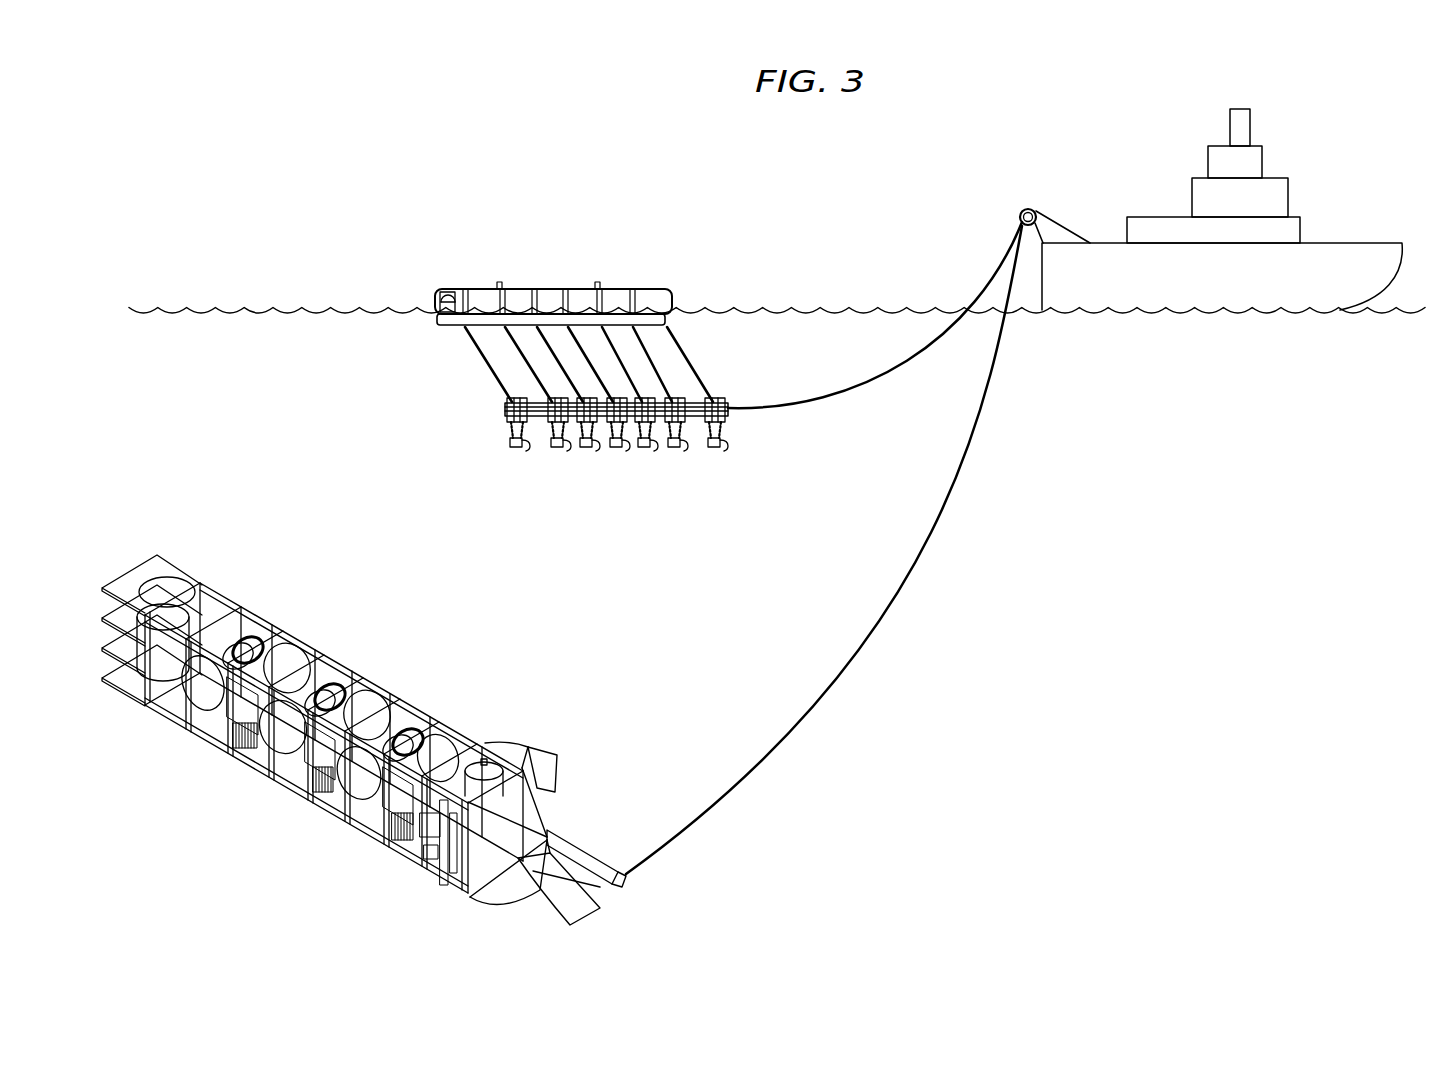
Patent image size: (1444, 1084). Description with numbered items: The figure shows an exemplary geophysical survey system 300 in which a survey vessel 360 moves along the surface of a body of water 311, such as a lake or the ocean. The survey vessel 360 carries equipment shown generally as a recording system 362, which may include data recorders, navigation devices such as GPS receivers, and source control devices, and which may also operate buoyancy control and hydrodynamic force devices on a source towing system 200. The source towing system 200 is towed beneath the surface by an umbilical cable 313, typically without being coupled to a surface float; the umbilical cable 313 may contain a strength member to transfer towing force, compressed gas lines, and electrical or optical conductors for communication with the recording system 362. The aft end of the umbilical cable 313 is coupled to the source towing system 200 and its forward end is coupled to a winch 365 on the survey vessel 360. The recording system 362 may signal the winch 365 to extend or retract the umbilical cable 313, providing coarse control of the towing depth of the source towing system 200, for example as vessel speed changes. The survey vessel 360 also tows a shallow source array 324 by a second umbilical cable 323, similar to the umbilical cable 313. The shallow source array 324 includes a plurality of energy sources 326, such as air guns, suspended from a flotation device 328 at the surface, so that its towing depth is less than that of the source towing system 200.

The geophysical survey system 300 is at (284, 104).
The body of water 311 is at (258, 371).
The flotation device 328 is at (618, 289).
The shallow source array 324 is at (546, 417).
The energy sources 326 is at (517, 448).
The umbilical cable 323 is at (827, 397).
The umbilical cable 313 is at (935, 500).
The survey vessel 360 is at (1215, 201).
The recording system 362 is at (1208, 160).
The winch 365 is at (1030, 209).
The source towing system 200 is at (318, 609).